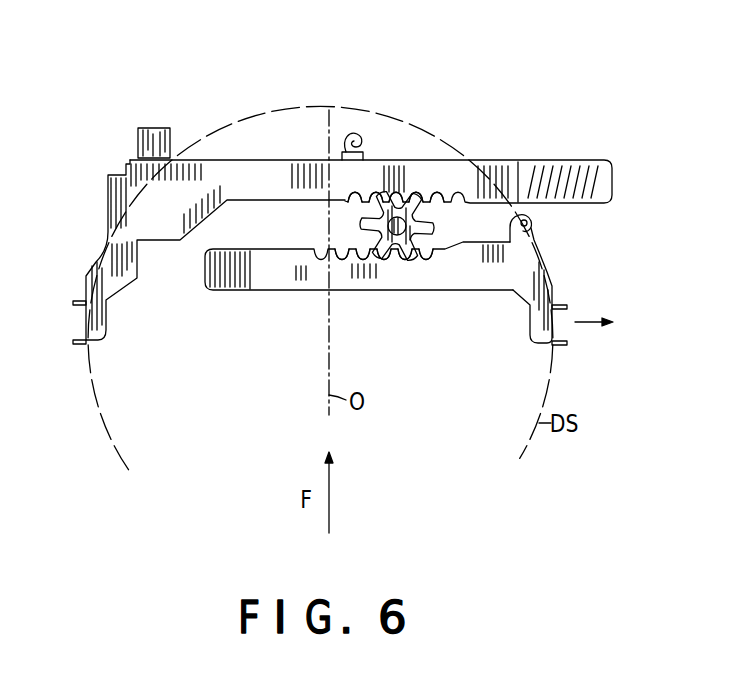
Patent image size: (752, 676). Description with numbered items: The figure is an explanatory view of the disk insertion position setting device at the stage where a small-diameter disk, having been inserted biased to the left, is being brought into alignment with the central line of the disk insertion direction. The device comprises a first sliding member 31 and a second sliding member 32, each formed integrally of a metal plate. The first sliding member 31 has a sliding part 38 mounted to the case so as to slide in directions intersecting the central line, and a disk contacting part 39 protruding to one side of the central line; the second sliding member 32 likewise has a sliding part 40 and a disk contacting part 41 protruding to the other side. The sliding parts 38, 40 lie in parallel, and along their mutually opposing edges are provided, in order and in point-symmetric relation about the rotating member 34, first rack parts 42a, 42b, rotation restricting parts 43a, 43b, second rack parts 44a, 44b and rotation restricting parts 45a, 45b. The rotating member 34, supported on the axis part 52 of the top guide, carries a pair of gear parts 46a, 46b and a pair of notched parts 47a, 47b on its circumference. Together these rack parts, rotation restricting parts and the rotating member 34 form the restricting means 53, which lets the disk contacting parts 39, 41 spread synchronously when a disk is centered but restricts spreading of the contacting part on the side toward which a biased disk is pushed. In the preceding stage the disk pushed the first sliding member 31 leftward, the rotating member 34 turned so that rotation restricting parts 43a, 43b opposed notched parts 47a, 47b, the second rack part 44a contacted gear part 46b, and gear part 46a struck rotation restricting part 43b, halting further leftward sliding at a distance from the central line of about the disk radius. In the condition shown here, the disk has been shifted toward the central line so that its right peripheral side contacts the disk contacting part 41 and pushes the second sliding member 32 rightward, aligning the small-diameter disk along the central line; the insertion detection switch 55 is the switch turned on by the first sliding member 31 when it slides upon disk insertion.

The first sliding member 31 is at (106, 203).
The second sliding member 32 is at (554, 283).
The rotating member 34 is at (362, 221).
The sliding part 38 is at (587, 168).
The disk contacting part 39 is at (83, 341).
The sliding part 40 is at (211, 281).
The disk contacting part 41 is at (552, 343).
The first rack part 42a is at (358, 222).
The first rack part 42b is at (432, 258).
The rotation restricting part 43a is at (379, 203).
The rotation restricting part 43b is at (381, 258).
The second rack part 44a is at (518, 217).
The second rack part 44b is at (342, 262).
The rotation restricting part 45a is at (519, 162).
The rotation restricting part 45b is at (251, 291).
The gear part 46a is at (359, 258).
The gear part 46b is at (421, 202).
The notched part 47a is at (404, 200).
The notched part 47b is at (399, 256).
The axis part 52 is at (406, 231).
The restricting means 53 is at (296, 218).
The insertion detection switch 55 is at (156, 128).